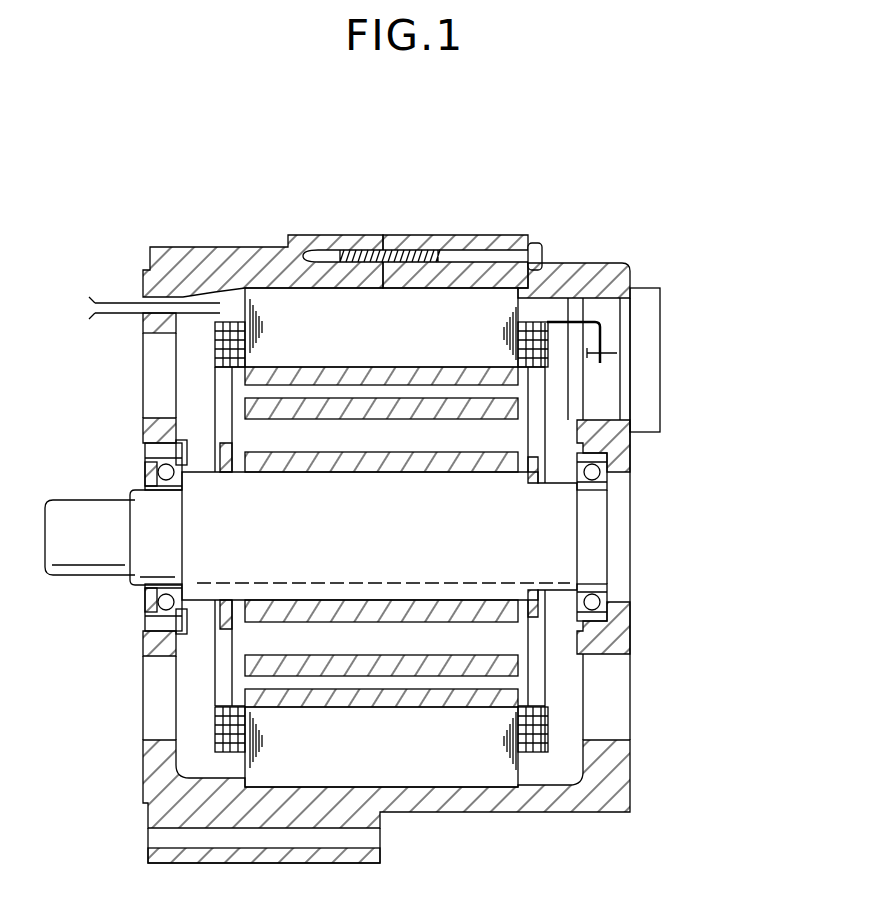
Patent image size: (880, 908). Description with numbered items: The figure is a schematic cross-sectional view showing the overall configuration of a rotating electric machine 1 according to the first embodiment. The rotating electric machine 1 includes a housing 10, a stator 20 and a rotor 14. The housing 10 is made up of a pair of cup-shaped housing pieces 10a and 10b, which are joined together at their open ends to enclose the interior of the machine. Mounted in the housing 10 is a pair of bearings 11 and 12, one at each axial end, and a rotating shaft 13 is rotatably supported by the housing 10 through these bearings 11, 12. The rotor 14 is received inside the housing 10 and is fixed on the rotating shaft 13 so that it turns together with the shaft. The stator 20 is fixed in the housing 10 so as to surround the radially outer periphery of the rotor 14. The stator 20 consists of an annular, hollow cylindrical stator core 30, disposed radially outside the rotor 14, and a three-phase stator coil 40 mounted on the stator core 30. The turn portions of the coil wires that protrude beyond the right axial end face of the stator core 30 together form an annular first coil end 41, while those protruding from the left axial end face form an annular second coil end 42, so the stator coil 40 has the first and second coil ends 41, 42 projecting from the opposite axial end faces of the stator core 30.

The rotating electric machine 1 is at (707, 163).
The housing 10 is at (438, 110).
The cup-shaped housing piece 10a is at (302, 247).
The cup-shaped housing piece 10b is at (403, 243).
The bearing 11 is at (150, 440).
The bearing 12 is at (610, 463).
The rotating shaft 13 is at (92, 557).
The rotor 14 is at (505, 404).
The stator 20 is at (433, 793).
The stator core 30 is at (483, 773).
The stator coil 40 is at (559, 726).
The first coil end 41 is at (548, 347).
The second coil end 42 is at (215, 350).